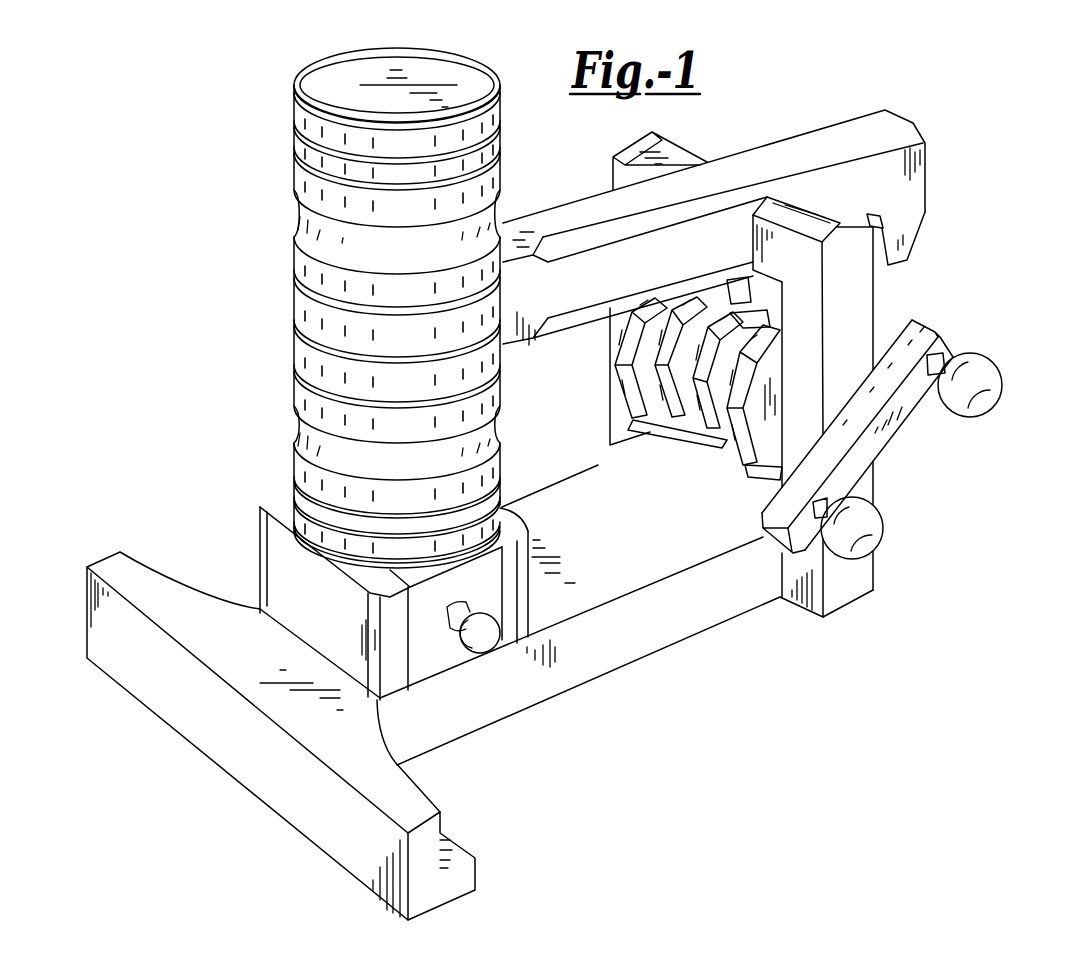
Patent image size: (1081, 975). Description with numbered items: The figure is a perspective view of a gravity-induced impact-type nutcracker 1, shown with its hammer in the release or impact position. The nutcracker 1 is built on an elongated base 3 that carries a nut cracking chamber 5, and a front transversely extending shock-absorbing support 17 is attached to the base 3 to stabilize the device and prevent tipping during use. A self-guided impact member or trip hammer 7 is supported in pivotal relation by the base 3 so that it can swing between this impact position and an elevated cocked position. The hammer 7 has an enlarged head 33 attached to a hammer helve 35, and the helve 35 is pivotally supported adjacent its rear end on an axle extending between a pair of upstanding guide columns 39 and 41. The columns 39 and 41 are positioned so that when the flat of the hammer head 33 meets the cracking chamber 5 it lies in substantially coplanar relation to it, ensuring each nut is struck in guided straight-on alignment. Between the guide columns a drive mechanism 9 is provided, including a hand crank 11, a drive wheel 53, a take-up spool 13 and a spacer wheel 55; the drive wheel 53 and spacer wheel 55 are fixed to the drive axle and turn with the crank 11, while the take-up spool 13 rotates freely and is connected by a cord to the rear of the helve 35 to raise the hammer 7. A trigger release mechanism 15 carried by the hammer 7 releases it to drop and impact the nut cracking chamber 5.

The nutcracker 1 is at (265, 266).
The base 3 is at (640, 636).
The nut cracking chamber 5 is at (513, 630).
The impact member or trip hammer 7 is at (822, 118).
The drive mechanism 9 is at (930, 298).
The hand crank 11 is at (900, 430).
The take-up spool 13 is at (711, 430).
The trigger release mechanism 15 is at (915, 239).
The shock-absorbing support 17 is at (228, 740).
The hammer head 33 is at (337, 73).
The hammer helve 35 is at (878, 120).
The guide column 39 is at (866, 304).
The guide column 41 is at (685, 150).
The drive wheel 53 is at (768, 473).
The spacer wheel 55 is at (618, 402).